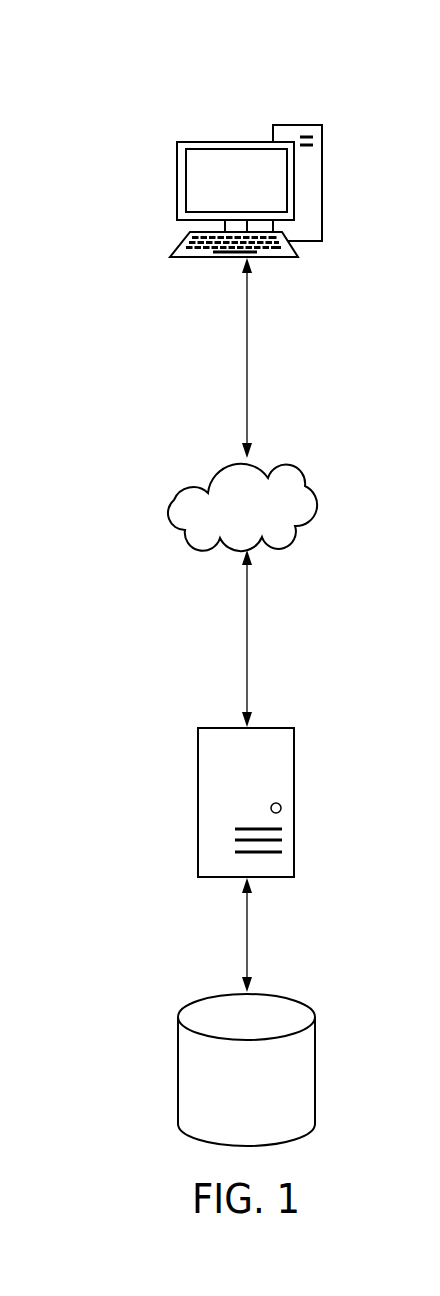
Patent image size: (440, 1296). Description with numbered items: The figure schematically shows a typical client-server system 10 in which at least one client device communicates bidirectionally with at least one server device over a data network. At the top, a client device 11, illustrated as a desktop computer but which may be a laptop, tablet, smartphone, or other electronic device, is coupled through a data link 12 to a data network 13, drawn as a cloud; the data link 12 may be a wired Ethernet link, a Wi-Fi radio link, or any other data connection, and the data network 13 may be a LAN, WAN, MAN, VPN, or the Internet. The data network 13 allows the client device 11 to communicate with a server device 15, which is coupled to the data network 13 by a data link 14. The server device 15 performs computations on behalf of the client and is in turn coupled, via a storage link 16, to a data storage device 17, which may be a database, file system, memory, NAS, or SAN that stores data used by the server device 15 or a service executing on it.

The system 10 is at (91, 42).
The client device 11 is at (247, 141).
The data link 12 is at (246, 387).
The data network 13 is at (208, 480).
The data link 14 is at (246, 630).
The server device 15 is at (217, 725).
The storage link 16 is at (246, 950).
The data storage device 17 is at (178, 1068).